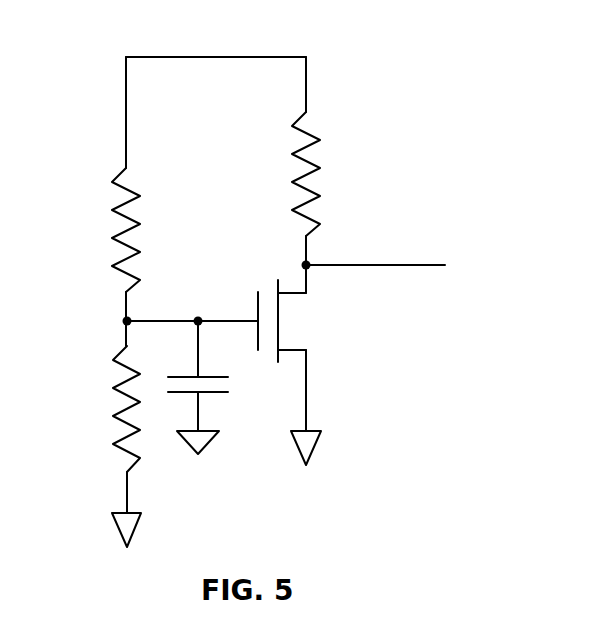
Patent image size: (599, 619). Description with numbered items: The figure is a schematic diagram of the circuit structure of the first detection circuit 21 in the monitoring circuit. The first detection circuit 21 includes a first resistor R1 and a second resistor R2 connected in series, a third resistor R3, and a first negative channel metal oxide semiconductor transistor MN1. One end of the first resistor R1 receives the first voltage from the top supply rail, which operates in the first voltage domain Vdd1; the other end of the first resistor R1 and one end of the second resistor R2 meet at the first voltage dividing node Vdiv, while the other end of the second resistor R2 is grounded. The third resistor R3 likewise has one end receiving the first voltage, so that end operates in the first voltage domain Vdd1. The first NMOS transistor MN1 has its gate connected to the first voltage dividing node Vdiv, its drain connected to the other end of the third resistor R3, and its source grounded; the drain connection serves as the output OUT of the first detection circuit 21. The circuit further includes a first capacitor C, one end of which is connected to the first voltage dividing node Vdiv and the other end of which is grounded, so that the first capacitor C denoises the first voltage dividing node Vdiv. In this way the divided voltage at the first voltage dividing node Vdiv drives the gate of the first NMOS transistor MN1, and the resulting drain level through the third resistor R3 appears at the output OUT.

The first detection circuit 21 is at (99, 110).
The first resistor R1 is at (147, 230).
The second resistor R2 is at (108, 409).
The third resistor R3 is at (325, 174).
The first capacitor C is at (208, 387).
The first NMOS transistor MN1 is at (295, 321).
The output OUT is at (375, 250).
The first voltage domain Vdd1 is at (216, 42).
The first voltage dividing node Vdiv is at (192, 302).